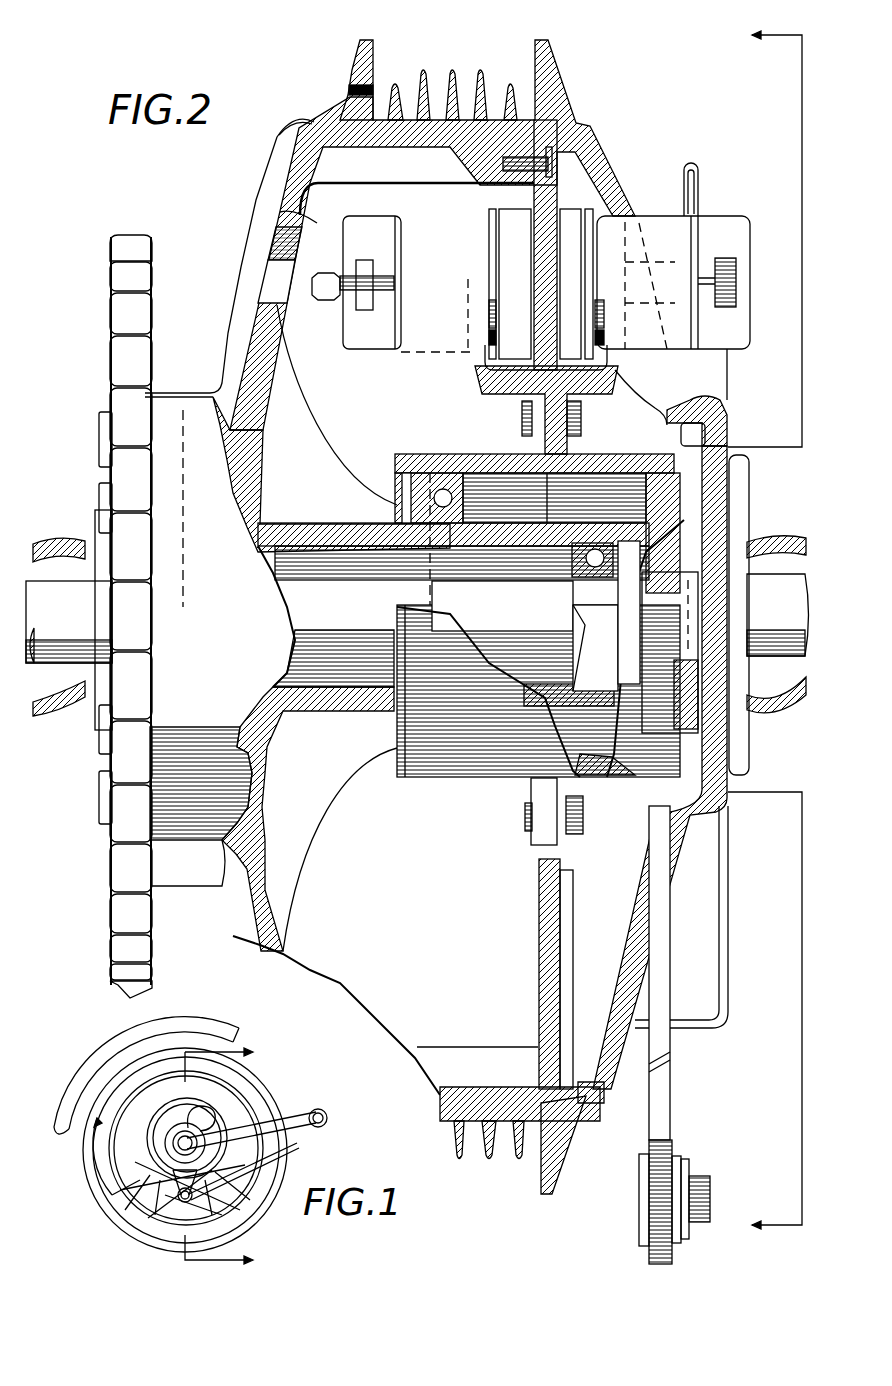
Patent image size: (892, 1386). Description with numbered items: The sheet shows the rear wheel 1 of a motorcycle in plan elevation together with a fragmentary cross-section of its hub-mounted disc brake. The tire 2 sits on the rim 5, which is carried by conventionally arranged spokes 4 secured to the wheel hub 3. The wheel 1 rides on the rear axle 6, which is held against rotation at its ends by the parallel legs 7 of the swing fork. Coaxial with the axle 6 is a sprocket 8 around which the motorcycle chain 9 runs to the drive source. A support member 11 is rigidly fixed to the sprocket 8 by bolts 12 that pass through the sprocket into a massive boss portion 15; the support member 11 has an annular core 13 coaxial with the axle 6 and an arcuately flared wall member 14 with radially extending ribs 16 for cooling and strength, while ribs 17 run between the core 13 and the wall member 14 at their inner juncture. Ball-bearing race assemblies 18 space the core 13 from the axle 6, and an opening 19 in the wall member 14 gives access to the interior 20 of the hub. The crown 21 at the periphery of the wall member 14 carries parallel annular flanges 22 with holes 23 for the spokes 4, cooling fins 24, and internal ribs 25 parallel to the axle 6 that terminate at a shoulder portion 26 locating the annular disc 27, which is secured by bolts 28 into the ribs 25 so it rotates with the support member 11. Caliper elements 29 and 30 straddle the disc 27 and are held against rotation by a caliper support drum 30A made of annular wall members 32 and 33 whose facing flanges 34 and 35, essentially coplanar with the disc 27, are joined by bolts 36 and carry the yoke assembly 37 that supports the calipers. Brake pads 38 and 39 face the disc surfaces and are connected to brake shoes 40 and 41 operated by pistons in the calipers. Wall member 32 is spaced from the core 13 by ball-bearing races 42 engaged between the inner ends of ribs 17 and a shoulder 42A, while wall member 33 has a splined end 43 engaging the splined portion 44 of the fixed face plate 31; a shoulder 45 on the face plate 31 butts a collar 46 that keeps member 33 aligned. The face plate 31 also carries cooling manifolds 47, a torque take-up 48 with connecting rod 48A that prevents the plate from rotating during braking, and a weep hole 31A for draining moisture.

In FIG. 1, the rear wheel 1 is at (122, 1070).
In FIG. 1, the tire 2 is at (150, 1052).
In FIG. 2, the wheel hub 3 is at (765, 631).
In FIG. 1, the wheel hub 3 is at (155, 1124).
In FIG. 1, the spokes 4 is at (142, 1205).
In FIG. 1, the rim 5 is at (132, 1195).
In FIG. 2, the rear axle 6 is at (275, 603).
In FIG. 1, the rear axle 6 is at (180, 1140).
In FIG. 2, the parallel legs of the swing fork 7 is at (55, 541).
In FIG. 1, the parallel legs of the swing fork 7 is at (270, 1112).
In FIG. 2, the sprocket 8 is at (110, 314).
In FIG. 2, the motorcycle chain 9 is at (122, 857).
In FIG. 2, the support member 11 is at (230, 400).
In FIG. 2, the bolts 12 is at (97, 425).
In FIG. 2, the annular core 13 is at (308, 522).
In FIG. 2, the wall member 14 is at (298, 163).
In FIG. 2, the boss portion 15 is at (186, 842).
In FIG. 2, the radially extending ribs 16 is at (258, 170).
In FIG. 2, the ribs 17 is at (240, 360).
In FIG. 2, the ball-bearing race assemblies 18 is at (603, 603).
In FIG. 2, the opening 19 is at (258, 267).
In FIG. 2, the interior of the wheel hub 20 is at (303, 212).
In FIG. 2, the crown 21 is at (400, 62).
In FIG. 2, the annular flanges 22 is at (358, 44).
In FIG. 2, the holes 23 is at (348, 90).
In FIG. 2, the cooling fins 24 is at (452, 72).
In FIG. 2, the ribs 25 is at (335, 155).
In FIG. 2, the shoulder portion 26 is at (462, 154).
In FIG. 2, the annular disc 27 is at (540, 253).
In FIG. 2, the bolts 28 is at (548, 168).
In FIG. 2, the caliper element 29 is at (366, 327).
In FIG. 2, the caliper element 30 is at (722, 222).
In FIG. 1, the caliper element 30 is at (205, 1120).
In FIG. 2, the caliper support drum 30A is at (425, 778).
In FIG. 2, the face plate 31 is at (692, 405).
In FIG. 2, the weep hole 31A is at (592, 1085).
In FIG. 2, the annular wall member 32 is at (484, 460).
In FIG. 2, the annular wall member 33 is at (624, 460).
In FIG. 2, the flange 34 is at (522, 423).
In FIG. 2, the flange 35 is at (582, 418).
In FIG. 2, the bolts 36 is at (585, 808).
In FIG. 2, the yoke assembly 37 is at (490, 385).
In FIG. 2, the brake pad 38 is at (512, 230).
In FIG. 2, the brake pad 39 is at (574, 212).
In FIG. 2, the brake shoe 40 is at (522, 215).
In FIG. 2, the brake shoe 41 is at (590, 212).
In FIG. 2, the ball-bearing races 42 is at (447, 550).
In FIG. 2, the shoulder 42A is at (425, 462).
In FIG. 2, the splined end 43 is at (675, 618).
In FIG. 2, the splined portion 44 is at (672, 670).
In FIG. 2, the shoulder 45 is at (712, 486).
In FIG. 2, the collar 46 is at (622, 580).
In FIG. 2, the cooling manifolds 47 is at (710, 962).
In FIG. 2, the torque take-up 48 is at (660, 1084).
In FIG. 1, the torque take-up 48 is at (180, 1222).
In FIG. 1, the connecting rod 48A is at (252, 1200).